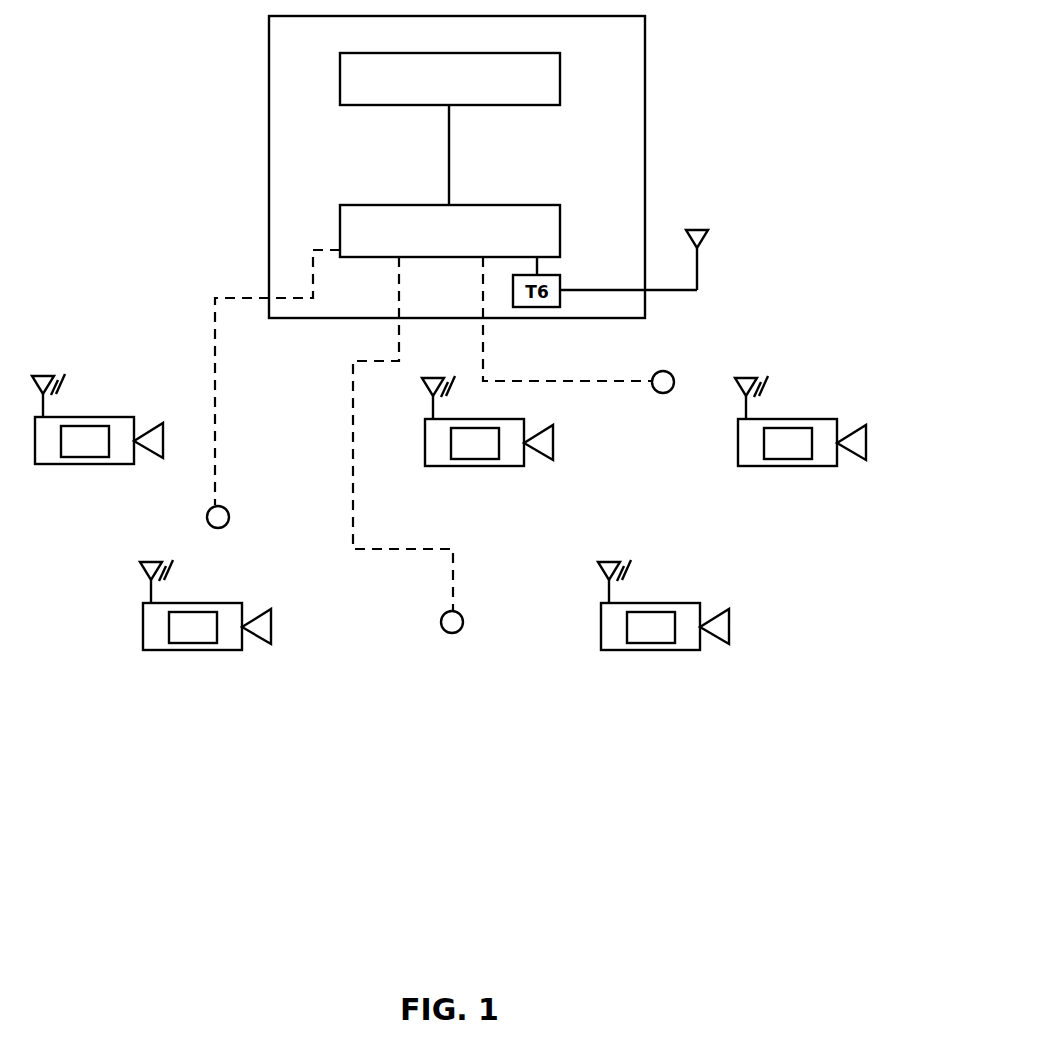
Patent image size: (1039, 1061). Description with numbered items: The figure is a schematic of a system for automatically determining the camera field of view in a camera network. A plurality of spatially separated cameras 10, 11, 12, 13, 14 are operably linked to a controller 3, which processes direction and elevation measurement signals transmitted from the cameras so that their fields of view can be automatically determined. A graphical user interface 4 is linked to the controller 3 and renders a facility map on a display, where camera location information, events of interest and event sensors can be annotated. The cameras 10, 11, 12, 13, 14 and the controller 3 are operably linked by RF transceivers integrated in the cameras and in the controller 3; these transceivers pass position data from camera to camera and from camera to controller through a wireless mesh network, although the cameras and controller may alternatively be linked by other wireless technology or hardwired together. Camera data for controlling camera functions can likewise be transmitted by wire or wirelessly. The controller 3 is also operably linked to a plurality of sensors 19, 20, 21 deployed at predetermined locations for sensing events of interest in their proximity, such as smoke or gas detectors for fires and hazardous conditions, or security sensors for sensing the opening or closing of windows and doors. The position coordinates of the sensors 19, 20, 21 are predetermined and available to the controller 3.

The controller 3 is at (558, 213).
The graphical user interface 4 is at (558, 82).
The camera 10 is at (83, 466).
The camera 11 is at (478, 466).
The camera 12 is at (790, 467).
The camera 13 is at (190, 650).
The camera 14 is at (651, 650).
The sensor 19 is at (229, 513).
The sensor 20 is at (671, 374).
The sensor 21 is at (463, 617).